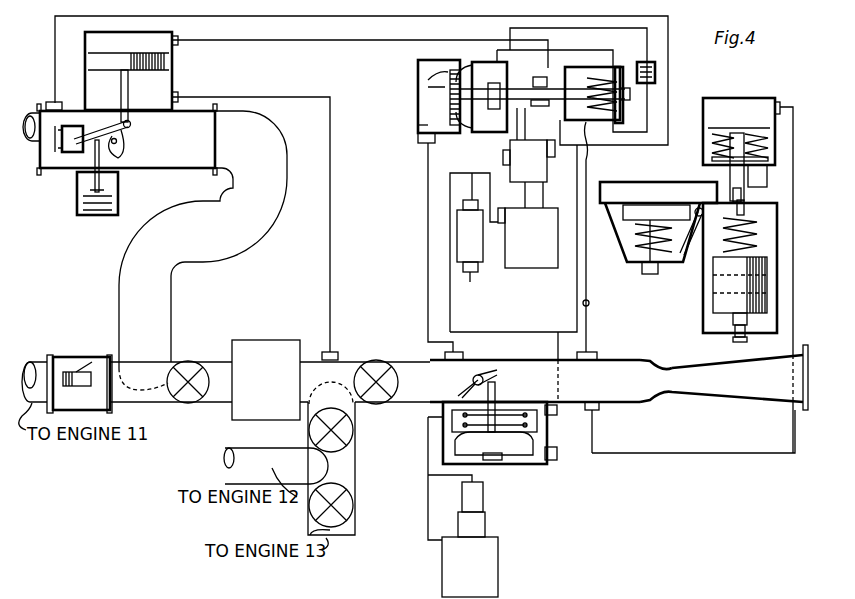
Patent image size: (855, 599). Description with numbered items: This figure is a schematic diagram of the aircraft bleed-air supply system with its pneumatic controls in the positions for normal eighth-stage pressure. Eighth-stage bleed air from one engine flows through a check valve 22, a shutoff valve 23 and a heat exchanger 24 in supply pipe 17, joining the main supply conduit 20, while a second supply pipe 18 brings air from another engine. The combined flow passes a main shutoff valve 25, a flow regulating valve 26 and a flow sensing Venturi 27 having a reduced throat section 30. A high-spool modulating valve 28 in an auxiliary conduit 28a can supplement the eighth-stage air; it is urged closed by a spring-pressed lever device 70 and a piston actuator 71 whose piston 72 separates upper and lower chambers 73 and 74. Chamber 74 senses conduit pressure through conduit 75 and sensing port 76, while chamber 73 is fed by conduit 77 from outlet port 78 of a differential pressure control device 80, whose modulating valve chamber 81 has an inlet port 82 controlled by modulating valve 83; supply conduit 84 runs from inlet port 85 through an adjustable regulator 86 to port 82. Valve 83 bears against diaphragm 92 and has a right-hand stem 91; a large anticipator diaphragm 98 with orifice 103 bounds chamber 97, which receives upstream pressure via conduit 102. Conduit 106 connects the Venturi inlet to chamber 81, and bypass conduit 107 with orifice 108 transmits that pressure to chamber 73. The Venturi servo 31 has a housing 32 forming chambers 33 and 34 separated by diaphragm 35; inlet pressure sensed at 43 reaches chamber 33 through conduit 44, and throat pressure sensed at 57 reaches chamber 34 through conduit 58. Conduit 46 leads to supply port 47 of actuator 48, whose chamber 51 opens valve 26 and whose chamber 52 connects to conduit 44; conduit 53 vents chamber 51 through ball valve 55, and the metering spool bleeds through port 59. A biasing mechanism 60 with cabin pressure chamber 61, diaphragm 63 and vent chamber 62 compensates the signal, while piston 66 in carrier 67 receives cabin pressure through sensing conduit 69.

The pressure supply conduit 84 is at (55, 40).
The inlet port 85 is at (50, 102).
The piston actuator 71 is at (78, 64).
The upper pressure chamber 73 is at (164, 43).
The piston 72 is at (168, 62).
The lower pressure chamber 74 is at (150, 92).
The high-spool modulating valve 28 is at (122, 142).
The spring-pressed lever device 70 is at (75, 178).
The auxiliary conduit 28a is at (119, 252).
The conduit 77 is at (458, 40).
The conduit 75 is at (330, 212).
The sensing port 76 is at (340, 352).
The orifice 103 is at (436, 82).
The anticipator diaphragm 98 is at (452, 106).
The left chamber 97 is at (421, 125).
The conduit 102 is at (428, 240).
The adjustable regulator 86 is at (498, 252).
The pressure inlet port 82 is at (529, 161).
The differential pressure control device 80 is at (513, 115).
The modulating valve chamber 81 is at (543, 103).
The modulating valve 83 is at (492, 87).
The diaphragm 92 is at (468, 65).
The outlet port 78 is at (545, 77).
The right-hand valve stem 91 is at (578, 72).
The bypass conduit 107 is at (647, 37).
The orifice 108 is at (655, 78).
The biasing mechanism 60 is at (745, 96).
The cabin pressure chamber 61 is at (710, 112).
The diaphragm 63 is at (712, 136).
The vent chamber 62 is at (710, 148).
The port 59 is at (770, 166).
The conduit 46 is at (597, 178).
The conduit 58 is at (590, 303).
The conduit 106 is at (588, 337).
The pressure chamber 34 is at (668, 185).
The diaphragm 35 is at (650, 213).
The pressure chamber 33 is at (632, 245).
The main housing member 32 is at (640, 268).
The pneumatic servo 31 is at (686, 260).
The adjustable carrier 67 is at (709, 266).
The piston 66 is at (752, 302).
The sensing conduit 69 is at (785, 312).
The check valve 22 is at (90, 358).
The supply pipe 17 is at (215, 403).
The shutoff valve 23 is at (203, 362).
The heat exchanger 24 is at (278, 347).
The main shutoff valve 25 is at (375, 404).
The supply pipe 18 is at (345, 467).
The main supply conduit 20 is at (415, 360).
The flow regulating valve 26 is at (495, 375).
The chamber 51 is at (536, 410).
The supply port 47 is at (548, 436).
The chamber 52 is at (533, 450).
The actuator 48 is at (522, 466).
The sensing location 43 is at (590, 402).
The conduit 44 is at (656, 453).
The conduit 53 is at (428, 474).
The spring controlled ball valve 55 is at (462, 500).
The throat sensing location 57 is at (649, 356).
The reduced throat section 30 is at (670, 366).
The flow sensing Venturi 27 is at (721, 388).